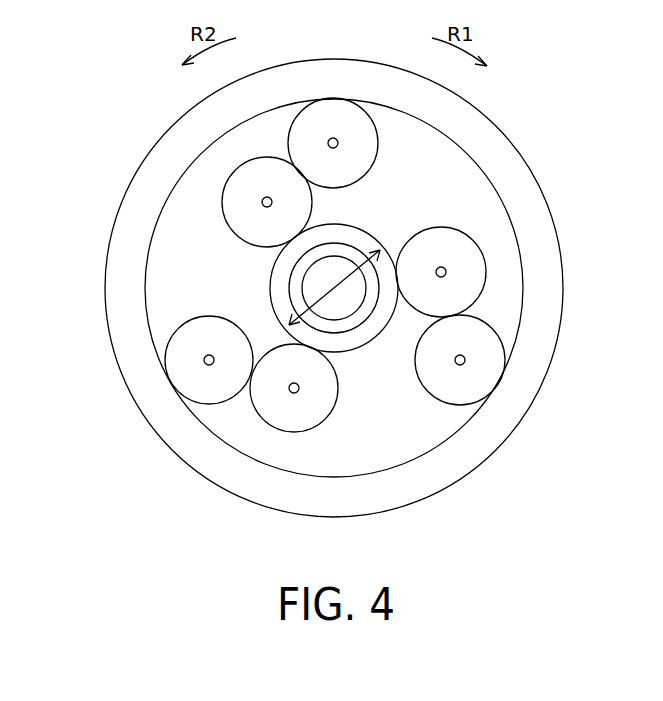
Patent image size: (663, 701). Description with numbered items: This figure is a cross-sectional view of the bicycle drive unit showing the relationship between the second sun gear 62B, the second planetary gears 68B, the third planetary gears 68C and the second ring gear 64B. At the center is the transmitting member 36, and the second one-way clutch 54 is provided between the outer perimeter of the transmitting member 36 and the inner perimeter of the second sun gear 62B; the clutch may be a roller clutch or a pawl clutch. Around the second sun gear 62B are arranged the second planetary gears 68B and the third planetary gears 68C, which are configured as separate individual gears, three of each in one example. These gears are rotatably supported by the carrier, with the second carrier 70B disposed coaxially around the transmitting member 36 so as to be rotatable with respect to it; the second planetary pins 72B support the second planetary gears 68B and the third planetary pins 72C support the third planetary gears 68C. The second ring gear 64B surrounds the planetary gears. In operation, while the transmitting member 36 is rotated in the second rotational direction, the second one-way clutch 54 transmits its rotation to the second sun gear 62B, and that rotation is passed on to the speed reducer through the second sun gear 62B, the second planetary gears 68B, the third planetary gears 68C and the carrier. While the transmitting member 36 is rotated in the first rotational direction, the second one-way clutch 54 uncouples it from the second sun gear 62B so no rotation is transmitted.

The transmitting member 36 is at (303, 281).
The second one-way clutch 54 is at (367, 323).
The second sun gear 62B is at (270, 300).
The second ring gear 64B is at (475, 103).
The second carrier 70B is at (467, 193).
The second planetary gears 68B is at (423, 229).
The third planetary gears 68C is at (372, 112).
The second planetary pins 72B is at (262, 200).
The third planetary pins 72C is at (330, 138).